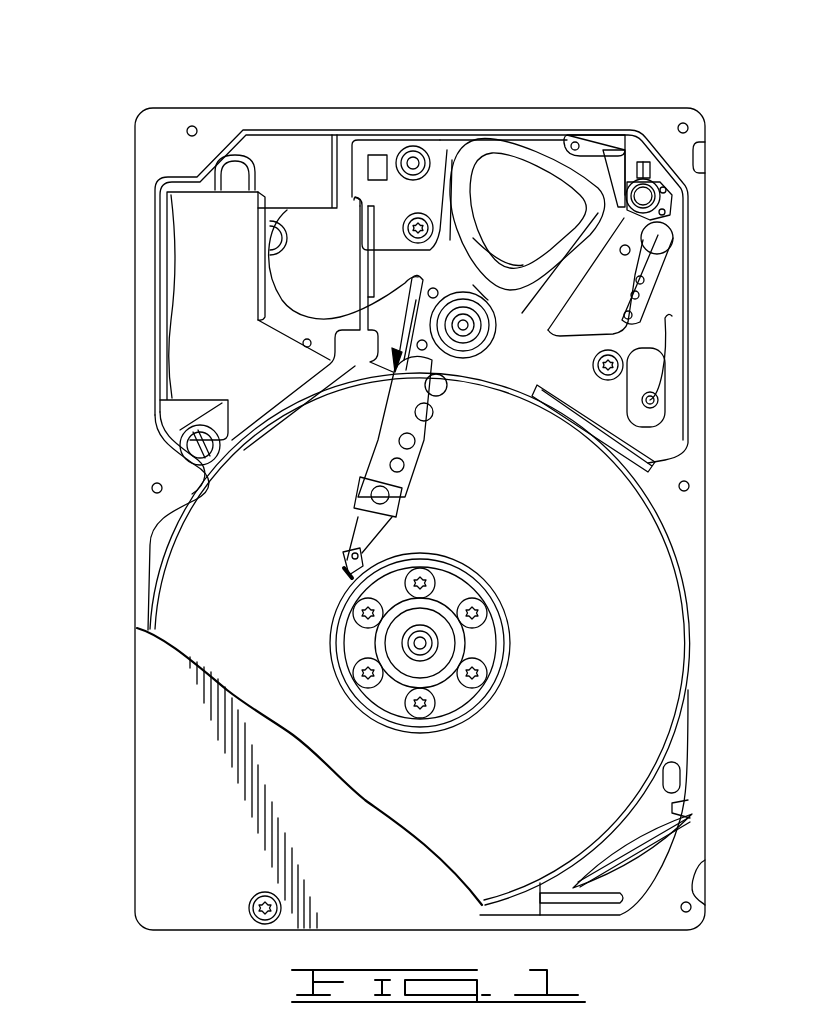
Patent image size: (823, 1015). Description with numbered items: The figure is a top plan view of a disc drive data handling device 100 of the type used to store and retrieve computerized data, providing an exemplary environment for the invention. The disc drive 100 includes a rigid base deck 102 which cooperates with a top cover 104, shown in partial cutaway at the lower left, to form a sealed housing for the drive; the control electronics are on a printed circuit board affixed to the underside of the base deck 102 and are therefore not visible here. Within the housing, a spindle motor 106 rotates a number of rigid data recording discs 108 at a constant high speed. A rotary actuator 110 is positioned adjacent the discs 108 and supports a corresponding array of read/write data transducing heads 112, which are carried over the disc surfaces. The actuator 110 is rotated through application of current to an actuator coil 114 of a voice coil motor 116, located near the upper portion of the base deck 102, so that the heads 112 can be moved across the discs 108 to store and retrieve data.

The disc drive data handling device 100 is at (150, 82).
The base deck 102 is at (272, 310).
The top cover 104 is at (165, 790).
The spindle motor 106 is at (428, 632).
The data recording discs 108 is at (650, 650).
The rotary actuator 110 is at (468, 365).
The read/write data transducing head 112 is at (340, 560).
The actuator coil 114 is at (527, 157).
The voice coil motor 116 is at (556, 148).